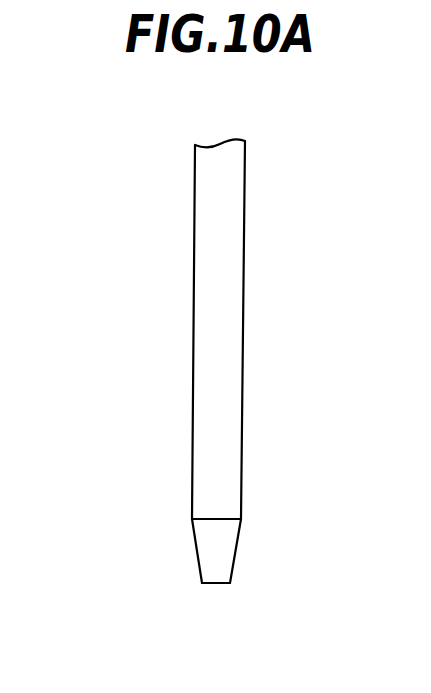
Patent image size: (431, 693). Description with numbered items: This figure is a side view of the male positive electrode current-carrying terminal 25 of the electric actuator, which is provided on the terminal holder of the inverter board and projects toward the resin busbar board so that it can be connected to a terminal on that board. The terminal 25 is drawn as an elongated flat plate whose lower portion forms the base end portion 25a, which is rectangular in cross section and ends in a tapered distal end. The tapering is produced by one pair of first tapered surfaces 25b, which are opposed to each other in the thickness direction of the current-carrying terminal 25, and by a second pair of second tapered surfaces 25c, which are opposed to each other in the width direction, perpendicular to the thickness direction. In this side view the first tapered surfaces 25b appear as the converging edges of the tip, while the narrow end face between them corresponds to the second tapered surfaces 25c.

The positive electrode current-carrying terminal 25 is at (257, 239).
The base end portion 25a is at (242, 470).
The first tapered surfaces 25b is at (273, 555).
The second tapered surfaces 25c is at (214, 577).